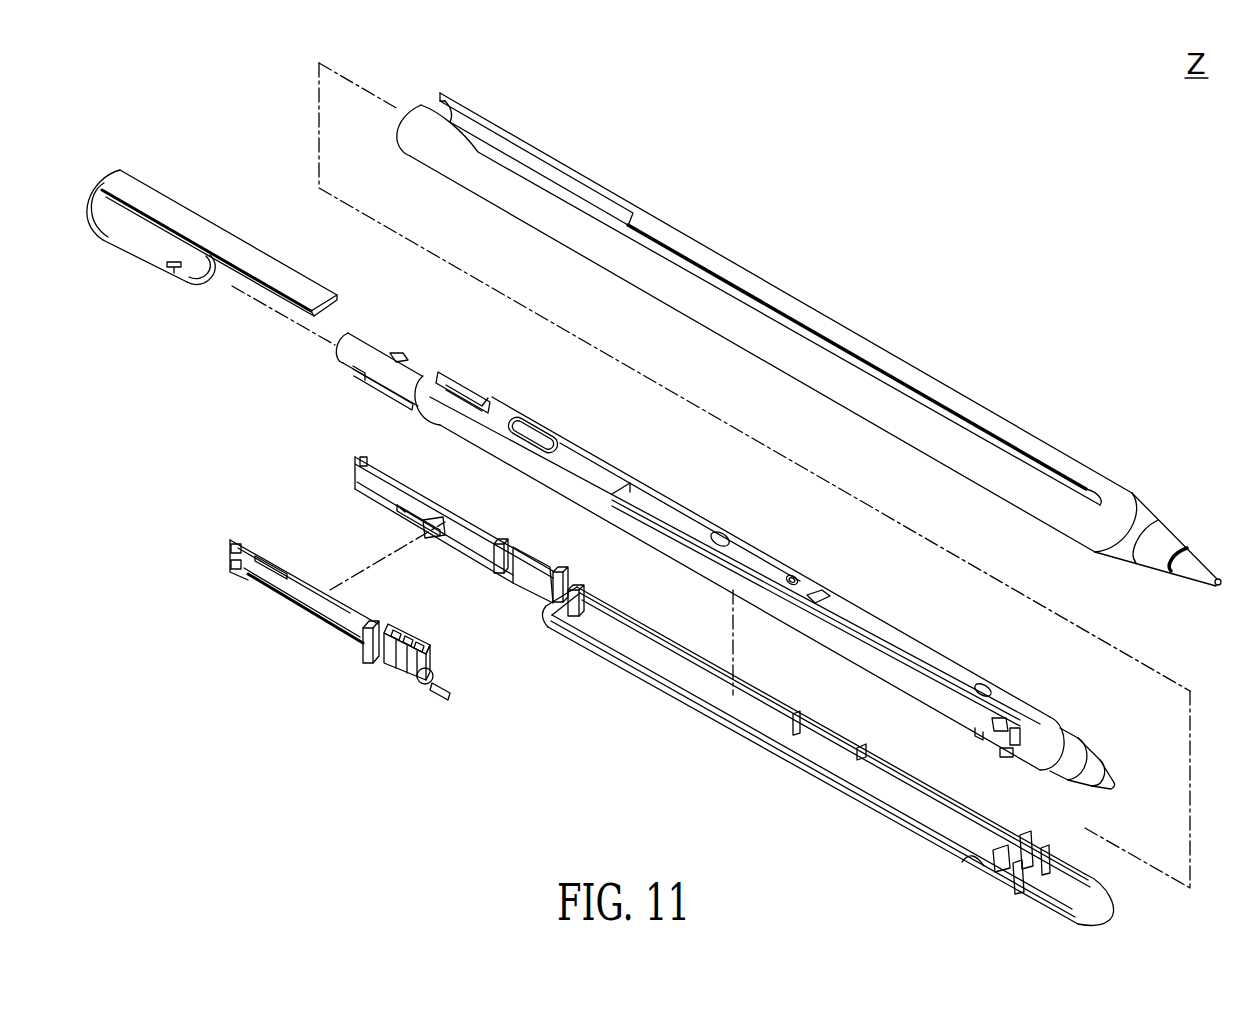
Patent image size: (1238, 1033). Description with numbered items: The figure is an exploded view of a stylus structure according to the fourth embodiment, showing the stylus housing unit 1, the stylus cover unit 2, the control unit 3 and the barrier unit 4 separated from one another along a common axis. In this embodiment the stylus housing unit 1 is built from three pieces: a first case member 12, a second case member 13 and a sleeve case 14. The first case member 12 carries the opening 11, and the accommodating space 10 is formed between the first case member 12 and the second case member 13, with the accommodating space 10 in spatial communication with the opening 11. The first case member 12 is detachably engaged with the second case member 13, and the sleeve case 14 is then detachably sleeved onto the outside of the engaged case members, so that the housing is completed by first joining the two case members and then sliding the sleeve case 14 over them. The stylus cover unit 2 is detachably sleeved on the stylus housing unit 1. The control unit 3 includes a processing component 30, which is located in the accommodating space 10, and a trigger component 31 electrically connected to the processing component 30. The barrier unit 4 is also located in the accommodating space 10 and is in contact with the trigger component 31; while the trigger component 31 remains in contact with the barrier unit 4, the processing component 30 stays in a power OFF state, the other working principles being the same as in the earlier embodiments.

The stylus housing unit 1 is at (846, 326).
The sleeve case 14 is at (866, 403).
The stylus cover unit 2 is at (184, 206).
The accommodating space 10 is at (460, 527).
The opening 11 is at (545, 425).
The first case member 12 is at (768, 564).
The second case member 13 is at (692, 701).
The control unit 3 is at (305, 628).
The processing component 30 is at (300, 596).
The trigger component 31 is at (366, 647).
The barrier unit 4 is at (446, 654).